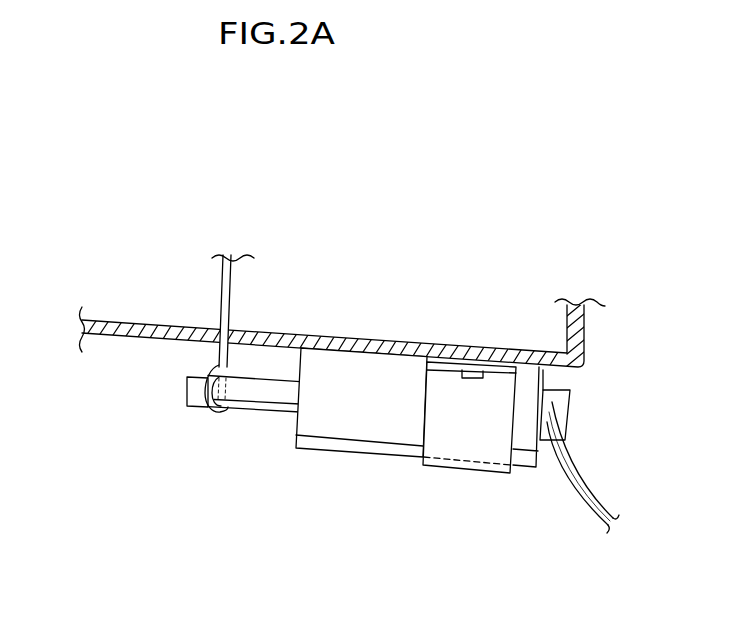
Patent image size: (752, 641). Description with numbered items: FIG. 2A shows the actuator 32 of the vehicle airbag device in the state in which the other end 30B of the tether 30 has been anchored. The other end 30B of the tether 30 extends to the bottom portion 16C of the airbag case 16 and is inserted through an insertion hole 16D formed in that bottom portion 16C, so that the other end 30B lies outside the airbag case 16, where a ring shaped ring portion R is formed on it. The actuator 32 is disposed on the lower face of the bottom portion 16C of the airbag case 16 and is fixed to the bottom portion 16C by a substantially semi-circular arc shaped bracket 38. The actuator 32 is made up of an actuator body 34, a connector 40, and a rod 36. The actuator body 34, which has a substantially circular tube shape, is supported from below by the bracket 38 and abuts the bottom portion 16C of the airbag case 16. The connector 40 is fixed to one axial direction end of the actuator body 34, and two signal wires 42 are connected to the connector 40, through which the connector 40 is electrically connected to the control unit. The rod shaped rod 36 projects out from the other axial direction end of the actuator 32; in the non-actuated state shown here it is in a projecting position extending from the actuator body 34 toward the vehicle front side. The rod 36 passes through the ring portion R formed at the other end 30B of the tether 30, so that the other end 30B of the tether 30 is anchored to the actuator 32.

The airbag case 16 is at (319, 333).
The bottom portion 16C is at (458, 347).
The insertion hole 16D is at (236, 324).
The tether 30 is at (232, 285).
The other end 30B is at (212, 360).
The ring portion R is at (207, 413).
The actuator 32 is at (363, 483).
The actuator body 34 is at (338, 452).
The rod 36 is at (268, 411).
The bracket 38 is at (469, 467).
The connector 40 is at (570, 412).
The signal wires 42 is at (563, 480).